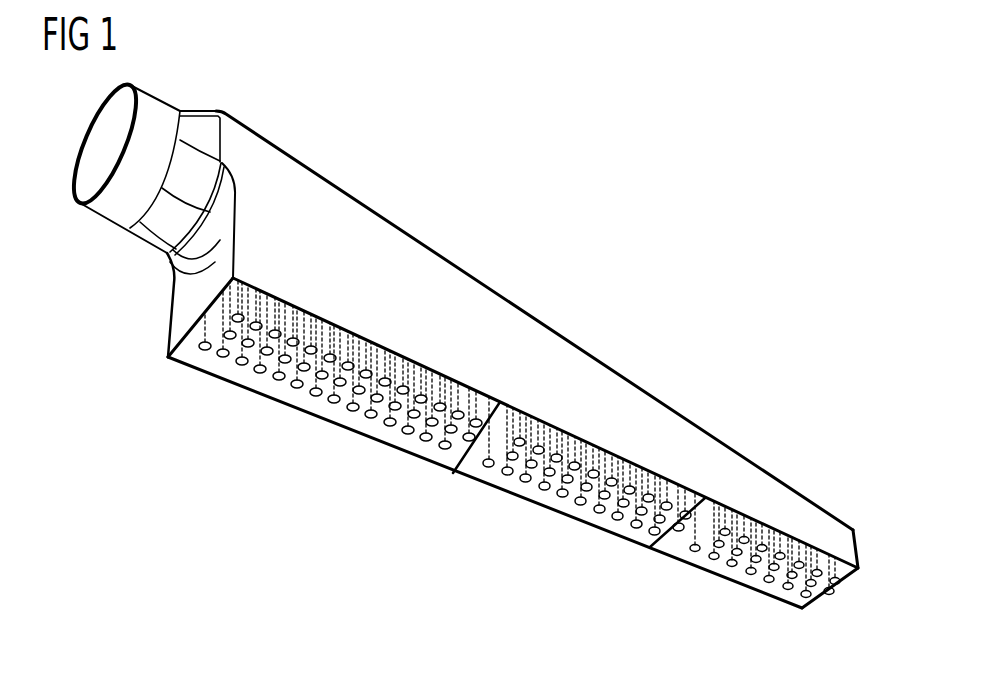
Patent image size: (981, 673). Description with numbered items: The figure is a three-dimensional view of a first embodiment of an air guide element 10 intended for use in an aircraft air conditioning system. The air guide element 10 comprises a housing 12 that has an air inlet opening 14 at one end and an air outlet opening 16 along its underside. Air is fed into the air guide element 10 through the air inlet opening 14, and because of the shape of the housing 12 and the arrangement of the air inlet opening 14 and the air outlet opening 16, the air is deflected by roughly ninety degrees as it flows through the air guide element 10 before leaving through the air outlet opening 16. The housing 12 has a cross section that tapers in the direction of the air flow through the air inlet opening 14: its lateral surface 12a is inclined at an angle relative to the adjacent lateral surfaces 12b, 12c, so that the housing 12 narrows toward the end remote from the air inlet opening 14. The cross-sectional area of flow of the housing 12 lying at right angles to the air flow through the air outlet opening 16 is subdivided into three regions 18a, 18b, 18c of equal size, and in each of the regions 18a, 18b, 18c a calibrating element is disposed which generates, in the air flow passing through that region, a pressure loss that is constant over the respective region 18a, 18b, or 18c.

The air guide element 10 is at (592, 232).
The housing 12 is at (370, 223).
The lateral surface 12a is at (648, 395).
The lateral surface 12b is at (184, 306).
The lateral surface 12c is at (842, 587).
The air inlet opening 14 is at (104, 142).
The air outlet opening 16 is at (772, 592).
The region 18a is at (258, 446).
The region 18b is at (522, 540).
The region 18c is at (718, 608).